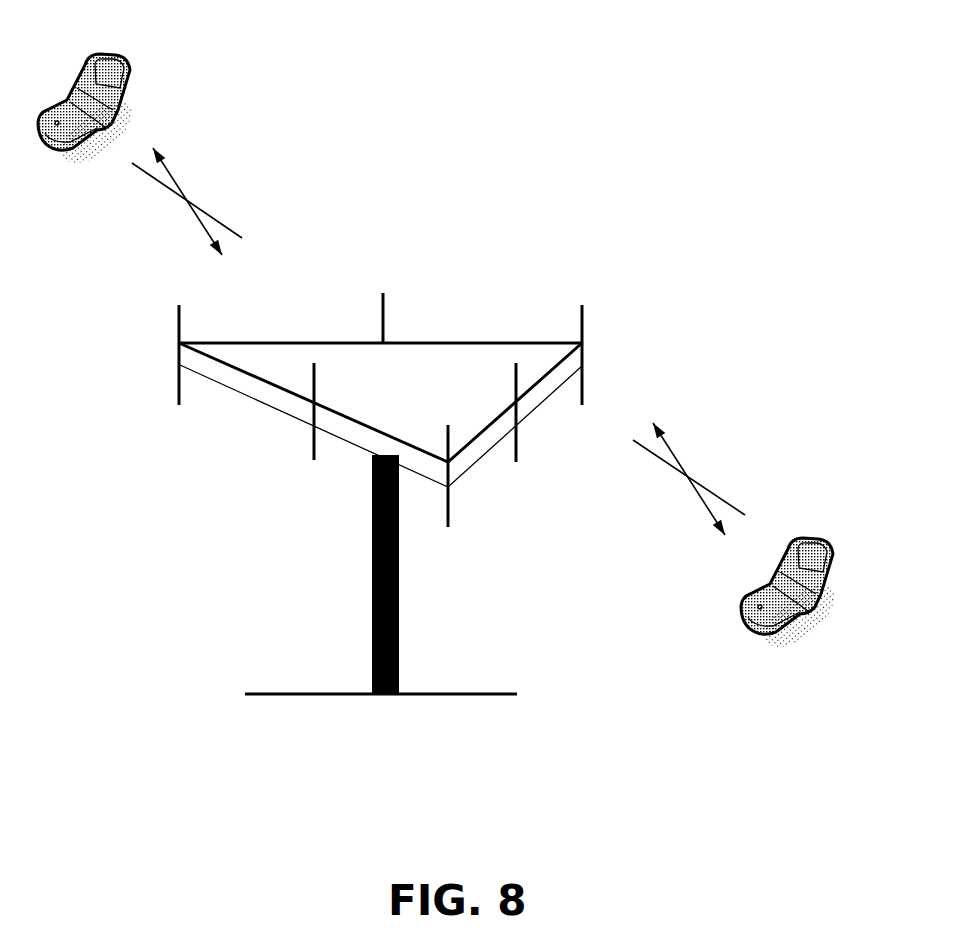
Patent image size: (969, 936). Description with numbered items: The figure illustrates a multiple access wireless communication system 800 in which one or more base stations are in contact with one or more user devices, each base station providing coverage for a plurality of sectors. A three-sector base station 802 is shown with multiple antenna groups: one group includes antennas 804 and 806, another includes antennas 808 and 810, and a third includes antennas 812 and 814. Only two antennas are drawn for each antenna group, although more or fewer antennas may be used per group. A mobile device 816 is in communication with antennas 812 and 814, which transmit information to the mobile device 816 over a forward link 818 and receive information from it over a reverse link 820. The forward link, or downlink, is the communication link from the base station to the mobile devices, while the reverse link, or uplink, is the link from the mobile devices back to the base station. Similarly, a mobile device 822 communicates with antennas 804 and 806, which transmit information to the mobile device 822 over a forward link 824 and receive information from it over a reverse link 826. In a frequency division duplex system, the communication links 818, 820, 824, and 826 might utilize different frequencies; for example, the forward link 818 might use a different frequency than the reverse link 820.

The multiple access wireless communication system 800 is at (741, 125).
The three-sector base station 802 is at (425, 694).
The antenna 804 is at (584, 312).
The antenna 806 is at (518, 445).
The antenna 808 is at (450, 505).
The antenna 810 is at (315, 458).
The antenna 812 is at (181, 318).
The antenna 814 is at (385, 300).
The mobile device 816 is at (121, 60).
The forward link 818 is at (202, 192).
The reverse link 820 is at (172, 200).
The mobile device 822 is at (823, 550).
The forward link 824 is at (682, 497).
The reverse link 826 is at (685, 458).